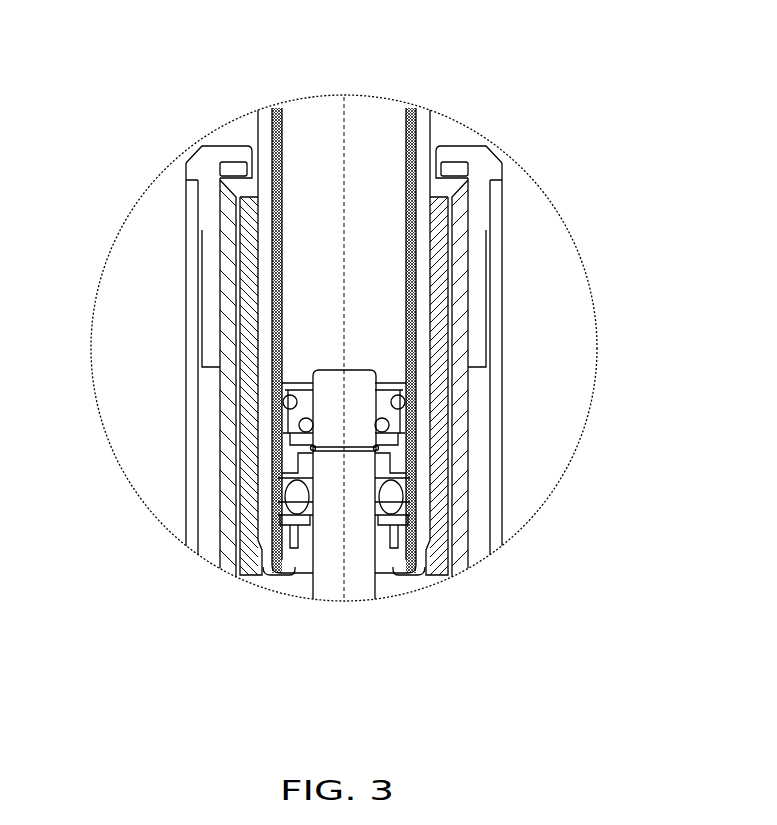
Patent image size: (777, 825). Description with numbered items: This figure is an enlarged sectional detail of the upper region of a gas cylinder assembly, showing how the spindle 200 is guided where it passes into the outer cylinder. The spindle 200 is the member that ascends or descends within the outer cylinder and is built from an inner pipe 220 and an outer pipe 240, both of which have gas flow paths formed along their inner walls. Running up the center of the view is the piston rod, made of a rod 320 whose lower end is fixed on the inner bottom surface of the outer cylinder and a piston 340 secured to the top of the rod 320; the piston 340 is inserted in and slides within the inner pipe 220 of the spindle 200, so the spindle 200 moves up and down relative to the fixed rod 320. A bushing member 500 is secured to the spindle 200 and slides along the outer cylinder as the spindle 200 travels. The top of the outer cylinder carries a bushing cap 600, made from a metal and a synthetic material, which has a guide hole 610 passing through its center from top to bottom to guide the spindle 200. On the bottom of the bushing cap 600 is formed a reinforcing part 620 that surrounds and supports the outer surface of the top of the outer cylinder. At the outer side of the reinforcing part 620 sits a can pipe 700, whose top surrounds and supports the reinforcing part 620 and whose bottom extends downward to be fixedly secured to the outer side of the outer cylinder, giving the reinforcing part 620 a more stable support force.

The spindle 200 is at (257, 123).
The inner pipe 220 is at (407, 150).
The outer pipe 240 is at (466, 146).
The rod 320 is at (368, 568).
The piston 340 is at (380, 368).
The bushing member 500 is at (220, 230).
The bushing cap 600 is at (200, 160).
The guide hole 610 is at (268, 157).
The reinforcing part 620 is at (198, 290).
The can pipe 700 is at (190, 393).